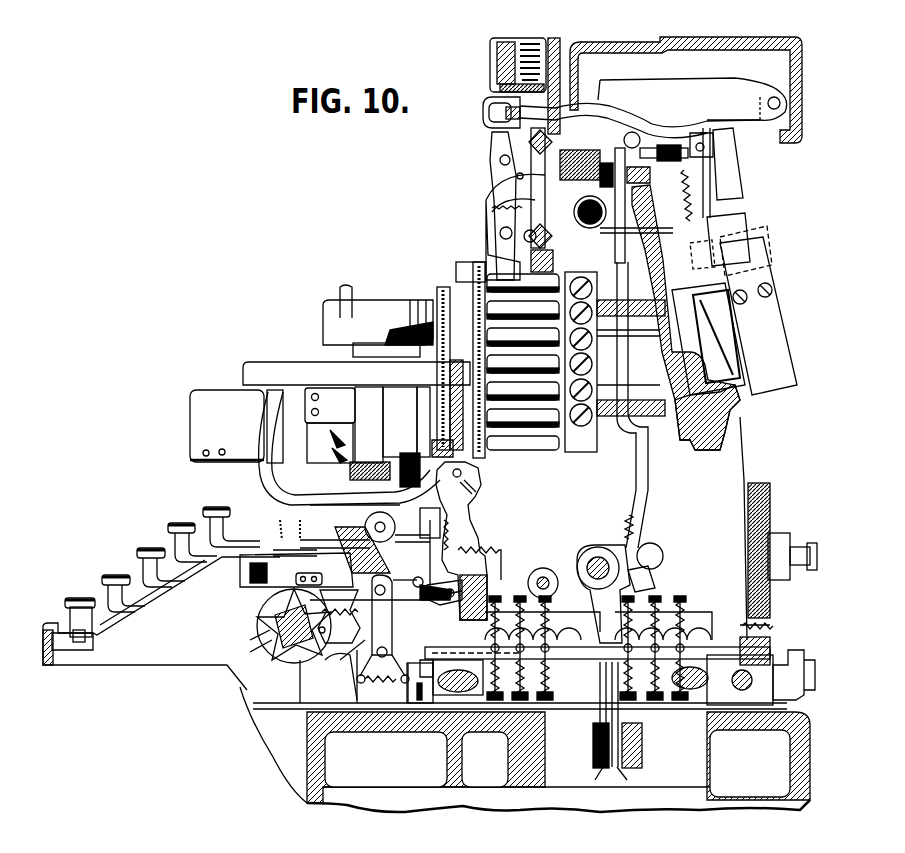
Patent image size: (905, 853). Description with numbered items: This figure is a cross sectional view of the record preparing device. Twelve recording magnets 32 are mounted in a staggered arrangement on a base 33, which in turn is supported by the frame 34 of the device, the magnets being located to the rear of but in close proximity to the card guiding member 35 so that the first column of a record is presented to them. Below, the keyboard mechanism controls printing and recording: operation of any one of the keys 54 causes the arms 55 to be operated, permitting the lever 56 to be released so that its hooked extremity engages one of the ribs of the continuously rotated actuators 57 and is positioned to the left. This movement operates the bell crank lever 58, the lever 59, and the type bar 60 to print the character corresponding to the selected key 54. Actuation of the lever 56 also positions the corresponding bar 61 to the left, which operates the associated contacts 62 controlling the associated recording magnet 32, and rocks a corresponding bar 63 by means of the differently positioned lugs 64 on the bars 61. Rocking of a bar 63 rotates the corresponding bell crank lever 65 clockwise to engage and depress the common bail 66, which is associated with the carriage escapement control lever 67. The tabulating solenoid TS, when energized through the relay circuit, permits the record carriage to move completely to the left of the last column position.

The recording magnets 32 is at (543, 445).
The base 33 is at (578, 442).
The frame 34 is at (695, 443).
The card guiding member 35 is at (483, 457).
The keys 54 is at (172, 527).
The arms 55 is at (263, 590).
The lever 56 is at (350, 657).
The continuously rotated actuators 57 is at (262, 636).
The bell crank lever 58 is at (388, 620).
The lever 59 is at (470, 513).
The type bar 60 is at (313, 500).
The bar 61 is at (588, 653).
The contacts 62 is at (603, 690).
The bar 63 is at (566, 600).
The lugs 64 is at (581, 640).
The bell crank lever 65 is at (650, 550).
The common bail 66 is at (652, 578).
The carriage escapement control lever 67 is at (624, 494).
The tabulating solenoid TS is at (698, 330).